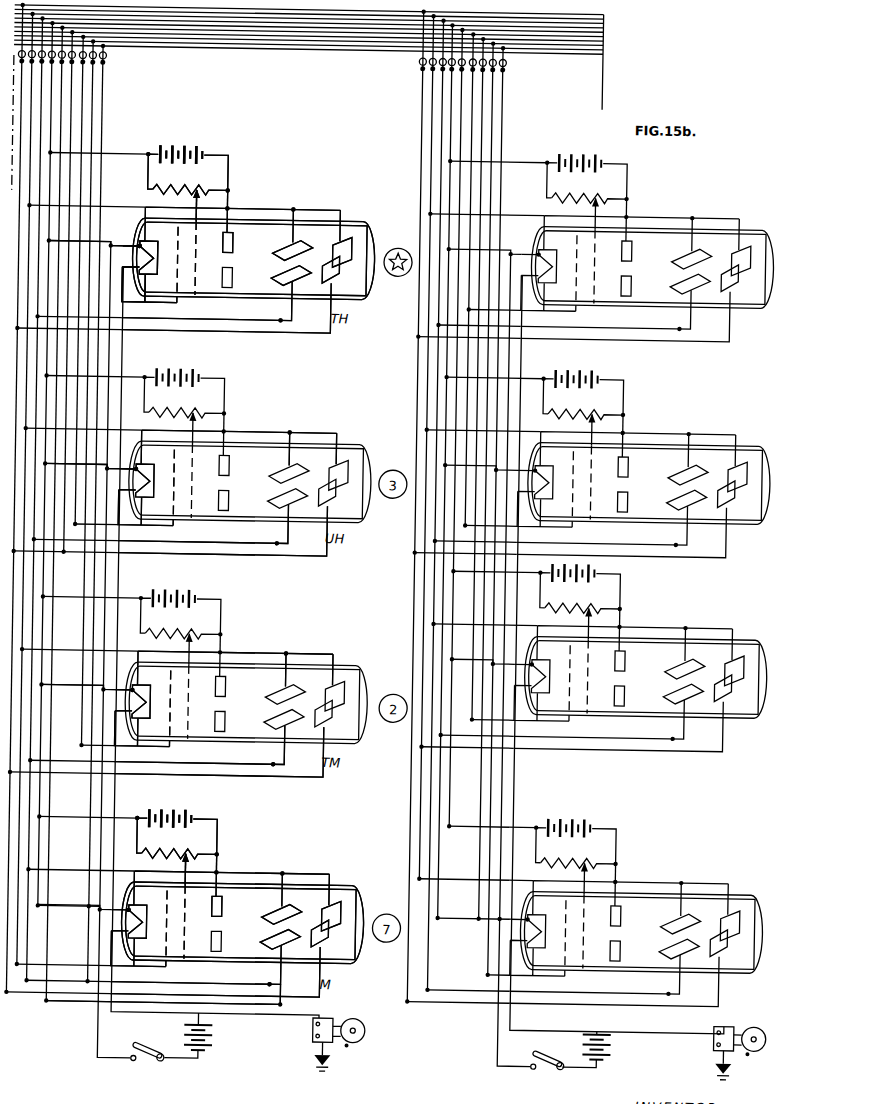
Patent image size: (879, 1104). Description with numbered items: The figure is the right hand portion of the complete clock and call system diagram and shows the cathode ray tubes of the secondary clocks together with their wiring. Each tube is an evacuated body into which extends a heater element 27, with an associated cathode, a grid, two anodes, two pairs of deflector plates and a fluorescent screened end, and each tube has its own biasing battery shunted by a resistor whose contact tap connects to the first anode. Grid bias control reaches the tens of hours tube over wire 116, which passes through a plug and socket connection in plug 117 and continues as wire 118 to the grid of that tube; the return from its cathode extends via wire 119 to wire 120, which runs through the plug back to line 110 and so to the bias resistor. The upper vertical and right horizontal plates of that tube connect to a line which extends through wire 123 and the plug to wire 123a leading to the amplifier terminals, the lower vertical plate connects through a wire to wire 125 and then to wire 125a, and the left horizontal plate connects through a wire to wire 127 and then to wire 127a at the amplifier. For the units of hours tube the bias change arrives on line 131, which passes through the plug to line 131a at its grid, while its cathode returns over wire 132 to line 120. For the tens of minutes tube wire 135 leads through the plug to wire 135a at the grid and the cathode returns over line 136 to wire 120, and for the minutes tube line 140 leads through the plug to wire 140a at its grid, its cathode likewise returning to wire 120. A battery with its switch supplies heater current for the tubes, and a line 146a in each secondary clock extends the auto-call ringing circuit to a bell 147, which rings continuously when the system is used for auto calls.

The wire 116 is at (170, 40).
The wire 127a is at (200, 9).
The line 110 is at (234, 27).
The wire 125a is at (270, 23).
The line 131 is at (308, 36).
The wire 123a is at (336, 14).
The wire 135 is at (368, 31).
The line 140 is at (392, 45).
The plug 117 is at (72, 61).
The wire 118 is at (72, 92).
The wire 120 is at (52, 109).
The line 131a is at (83, 133).
The wire 123 is at (32, 171).
The wire 119 is at (114, 243).
The wire 125 is at (42, 347).
The wire 127 is at (22, 408).
The wire 132 is at (96, 464).
The line 136 is at (73, 688).
The wire 135a is at (93, 722).
The wire 140a is at (103, 834).
The line 146a is at (296, 1003).
The heater element 27 is at (149, 292).
The bell 147 is at (368, 1040).